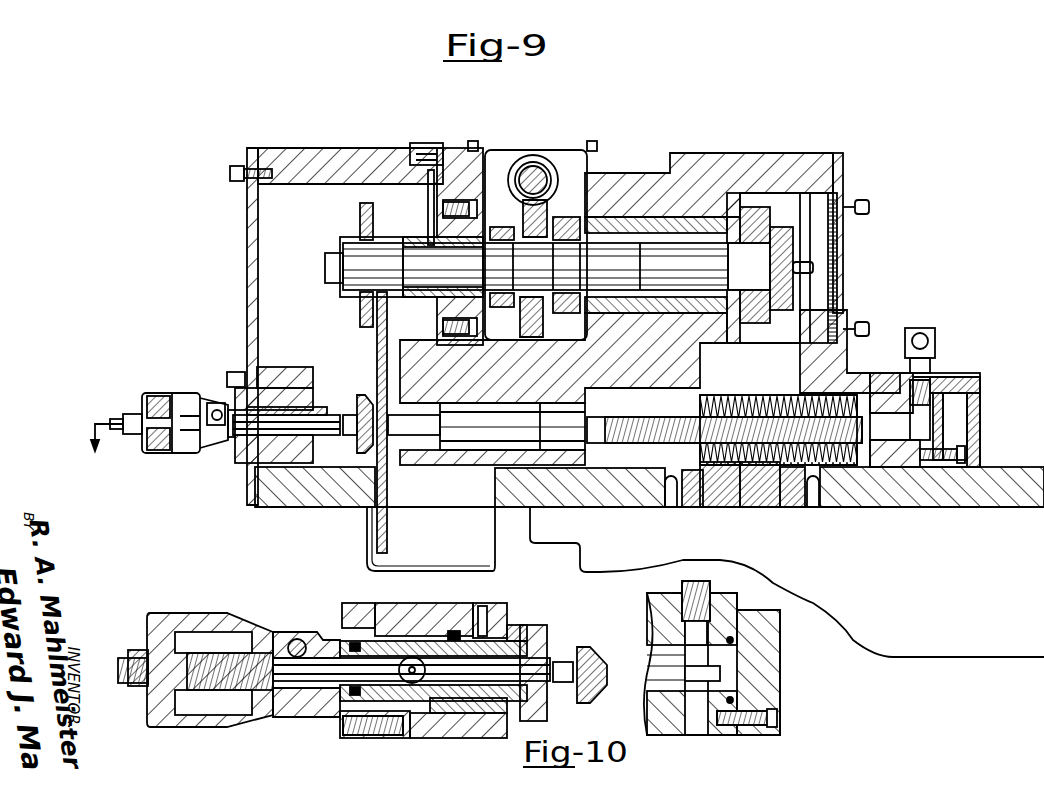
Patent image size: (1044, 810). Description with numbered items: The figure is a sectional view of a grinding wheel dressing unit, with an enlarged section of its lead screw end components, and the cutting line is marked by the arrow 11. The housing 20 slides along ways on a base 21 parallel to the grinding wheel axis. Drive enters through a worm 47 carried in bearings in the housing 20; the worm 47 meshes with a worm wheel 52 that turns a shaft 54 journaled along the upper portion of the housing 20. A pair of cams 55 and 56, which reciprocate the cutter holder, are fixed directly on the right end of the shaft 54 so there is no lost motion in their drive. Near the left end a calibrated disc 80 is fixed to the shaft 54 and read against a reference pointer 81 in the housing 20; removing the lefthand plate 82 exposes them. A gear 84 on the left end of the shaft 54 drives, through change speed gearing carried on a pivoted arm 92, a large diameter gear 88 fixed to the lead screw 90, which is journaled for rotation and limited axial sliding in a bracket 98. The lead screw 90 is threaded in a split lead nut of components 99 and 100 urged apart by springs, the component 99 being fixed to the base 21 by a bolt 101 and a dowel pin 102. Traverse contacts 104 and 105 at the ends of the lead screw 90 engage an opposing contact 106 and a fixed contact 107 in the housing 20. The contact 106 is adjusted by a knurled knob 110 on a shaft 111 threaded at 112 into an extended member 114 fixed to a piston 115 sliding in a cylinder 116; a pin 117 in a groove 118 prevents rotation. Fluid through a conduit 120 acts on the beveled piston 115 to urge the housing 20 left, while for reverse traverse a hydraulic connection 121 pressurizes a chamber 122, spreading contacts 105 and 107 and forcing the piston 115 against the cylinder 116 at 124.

In FIG. 9, the section line 11 is at (104, 450).
In FIG. 9, the housing 20 is at (777, 157).
In FIG. 9, the base 21 is at (1012, 478).
In FIG. 9, the worm 47 is at (536, 170).
In FIG. 9, the worm wheel 52 is at (537, 230).
In FIG. 9, the shaft 54 is at (610, 243).
In FIG. 9, the cam 55 is at (746, 323).
In FIG. 9, the cam 56 is at (760, 322).
In FIG. 9, the calibrated disc 80 is at (428, 206).
In FIG. 9, the reference pointer 81 is at (424, 165).
In FIG. 9, the lefthand plate 82 is at (247, 252).
In FIG. 9, the gear 84 is at (360, 220).
In FIG. 9, the large diameter gear 88 is at (378, 336).
In FIG. 9, the lead screw 90 is at (562, 432).
In FIG. 10, the lead screw 90 is at (642, 663).
In FIG. 9, the arm 92 is at (410, 350).
In FIG. 9, the bracket 98 is at (458, 458).
In FIG. 9, the lead-nut component 99 is at (772, 494).
In FIG. 9, the lead-nut component 100 is at (835, 470).
In FIG. 9, the bolt 101 is at (727, 504).
In FIG. 9, the dowel pin 102 is at (762, 502).
In FIG. 9, the traverse contact 104 is at (355, 420).
In FIG. 10, the traverse contact 104 is at (582, 660).
In FIG. 9, the traverse contact 105 is at (925, 420).
In FIG. 10, the traverse contact 105 is at (694, 692).
In FIG. 9, the opposing contact 106 is at (346, 436).
In FIG. 10, the opposing contact 106 is at (555, 665).
In FIG. 9, the opposing contact 107 is at (935, 428).
In FIG. 10, the opposing contact 107 is at (708, 685).
In FIG. 9, the knurled knob 110 is at (160, 395).
In FIG. 10, the knurled knob 110 is at (180, 617).
In FIG. 10, the shaft 111 is at (317, 660).
In FIG. 10, the thread 112 is at (230, 635).
In FIG. 10, the longitudinally extended member 114 is at (317, 715).
In FIG. 10, the piston 115 is at (455, 628).
In FIG. 10, the cylinder 116 is at (420, 620).
In FIG. 10, the pin 117 is at (482, 633).
In FIG. 10, the groove 118 is at (510, 635).
In FIG. 9, the conduit 120 is at (270, 424).
In FIG. 10, the conduit 120 is at (412, 683).
In FIG. 9, the hydraulic connection 121 is at (936, 338).
In FIG. 9, the pressure chamber 122 is at (923, 467).
In FIG. 10, the engagement point 124 is at (378, 637).